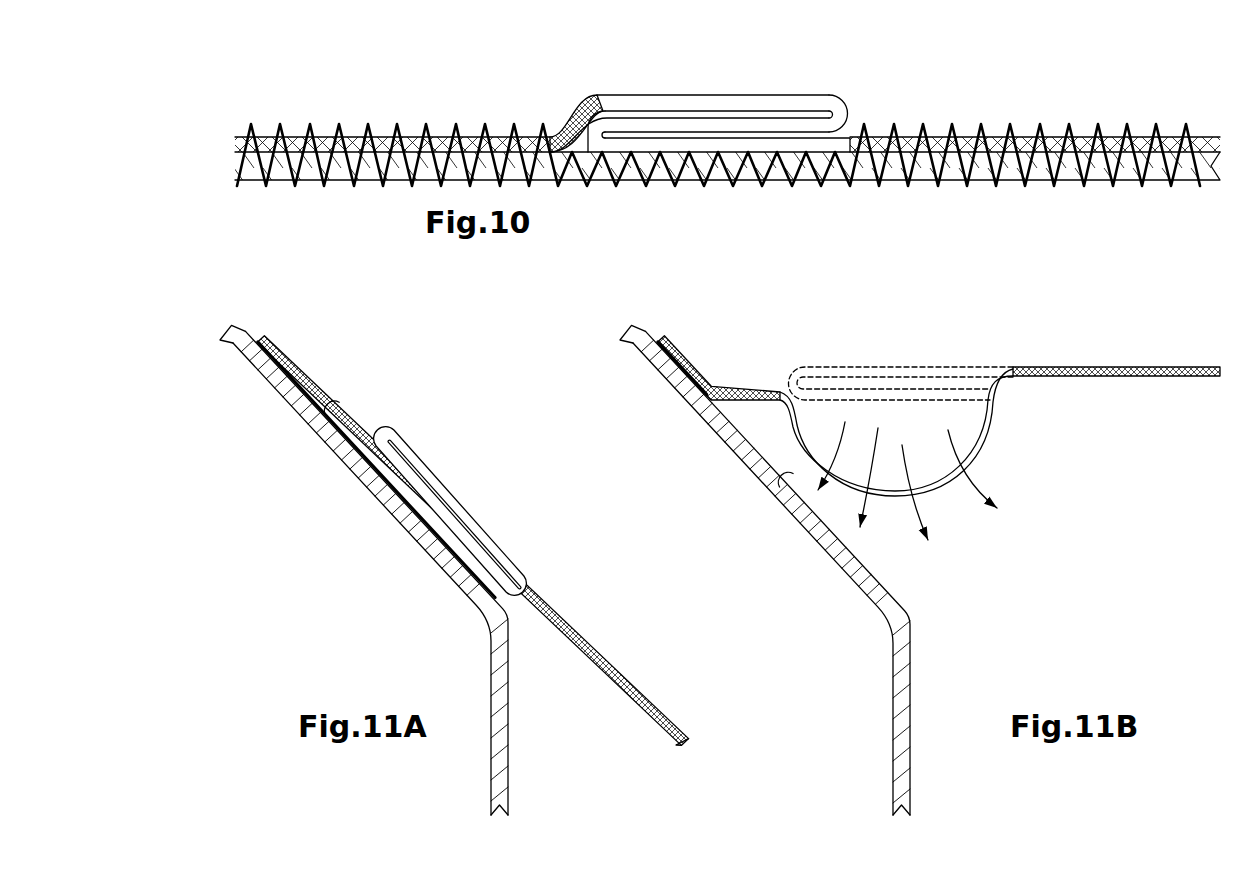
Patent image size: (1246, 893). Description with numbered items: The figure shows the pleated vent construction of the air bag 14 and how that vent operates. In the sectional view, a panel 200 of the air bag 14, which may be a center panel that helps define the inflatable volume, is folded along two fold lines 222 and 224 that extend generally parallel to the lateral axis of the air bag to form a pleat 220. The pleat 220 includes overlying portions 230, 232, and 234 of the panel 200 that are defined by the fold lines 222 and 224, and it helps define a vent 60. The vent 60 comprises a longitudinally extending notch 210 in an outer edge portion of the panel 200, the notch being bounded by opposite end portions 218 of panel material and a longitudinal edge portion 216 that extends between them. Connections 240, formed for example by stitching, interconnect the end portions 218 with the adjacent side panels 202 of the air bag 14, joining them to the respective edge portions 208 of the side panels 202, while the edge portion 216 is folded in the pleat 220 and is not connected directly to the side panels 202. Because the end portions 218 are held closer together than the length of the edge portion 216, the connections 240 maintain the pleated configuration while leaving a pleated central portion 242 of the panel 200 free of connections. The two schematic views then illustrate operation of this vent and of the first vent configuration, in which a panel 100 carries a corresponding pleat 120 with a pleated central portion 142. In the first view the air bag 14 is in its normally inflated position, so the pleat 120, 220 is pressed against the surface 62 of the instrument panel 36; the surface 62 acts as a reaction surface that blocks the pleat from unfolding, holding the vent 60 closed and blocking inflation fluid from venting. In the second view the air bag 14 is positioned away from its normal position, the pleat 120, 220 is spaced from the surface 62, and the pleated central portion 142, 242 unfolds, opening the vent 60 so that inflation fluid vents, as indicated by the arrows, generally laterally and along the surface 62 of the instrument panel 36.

In FIG. 10, the air bag 14 is at (352, 86).
In FIG. 11A, the air bag 14 is at (298, 370).
In FIG. 11B, the air bag 14 is at (690, 372).
In FIG. 11A, the instrument panel 36 is at (293, 400).
In FIG. 10, the vent 60 is at (833, 90).
In FIG. 11A, the vent 60 is at (513, 482).
In FIG. 11B, the vent 60 is at (961, 504).
In FIG. 11A, the surface of the instrument panel 62 is at (312, 412).
In FIG. 11B, the surface of the instrument panel 62 is at (793, 470).
In FIG. 11A, the panel 100 is at (472, 539).
In FIG. 11B, the panel 100 is at (938, 359).
In FIG. 11A, the pleat 120 is at (503, 496).
In FIG. 11B, the pleat 120 is at (914, 350).
In FIG. 11A, the pleated central portion 142 is at (503, 511).
In FIG. 11B, the pleated central portion 142 is at (903, 479).
In FIG. 10, the panel 200 is at (468, 137).
In FIG. 11A, the panel 200 is at (310, 383).
In FIG. 11B, the panel 200 is at (742, 390).
In FIG. 10, the side panel 202 is at (372, 172).
In FIG. 10, the edge portion of the side panel 208 is at (312, 172).
In FIG. 10, the notch 210 is at (760, 129).
In FIG. 10, the edge portion 216 is at (712, 122).
In FIG. 10, the end portion 218 is at (527, 130).
In FIG. 10, the pleat 220 is at (767, 78).
In FIG. 11A, the pleat 220 is at (455, 474).
In FIG. 11B, the pleat 220 is at (918, 356).
In FIG. 10, the fold line 222 is at (843, 115).
In FIG. 10, the fold line 224 is at (590, 130).
In FIG. 10, the overlying portion 230 is at (657, 102).
In FIG. 10, the overlying portion 232 is at (695, 123).
In FIG. 10, the overlying portion 234 is at (668, 145).
In FIG. 10, the connection 240 is at (992, 180).
In FIG. 11A, the pleated central portion 242 is at (473, 523).
In FIG. 11B, the pleated central portion 242 is at (923, 488).